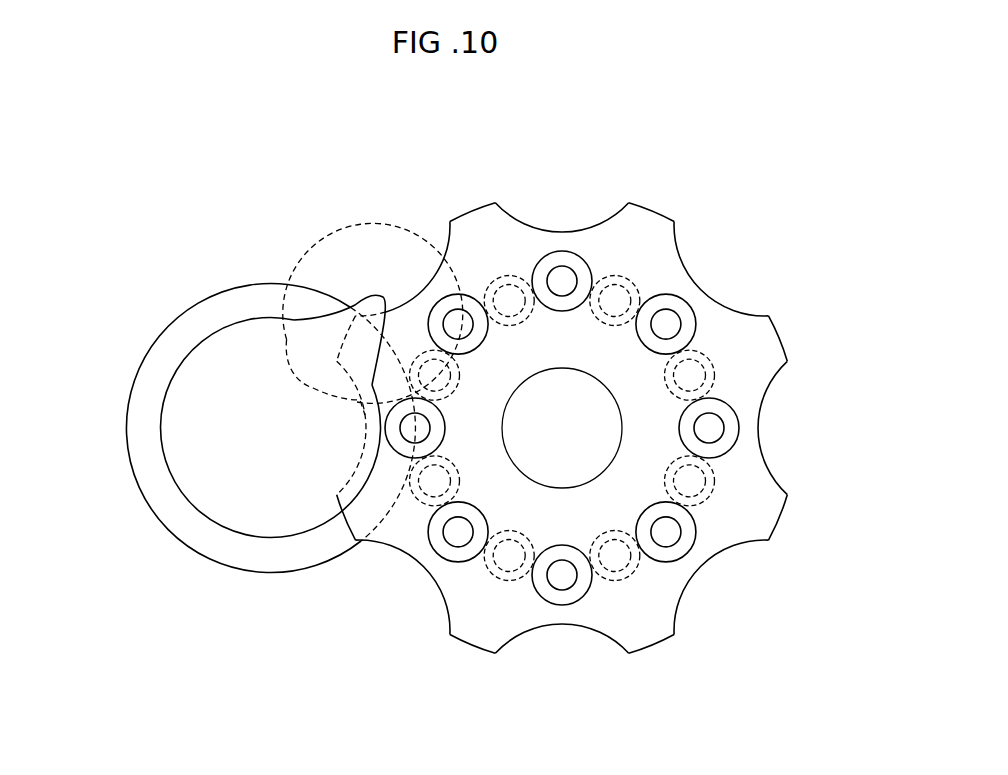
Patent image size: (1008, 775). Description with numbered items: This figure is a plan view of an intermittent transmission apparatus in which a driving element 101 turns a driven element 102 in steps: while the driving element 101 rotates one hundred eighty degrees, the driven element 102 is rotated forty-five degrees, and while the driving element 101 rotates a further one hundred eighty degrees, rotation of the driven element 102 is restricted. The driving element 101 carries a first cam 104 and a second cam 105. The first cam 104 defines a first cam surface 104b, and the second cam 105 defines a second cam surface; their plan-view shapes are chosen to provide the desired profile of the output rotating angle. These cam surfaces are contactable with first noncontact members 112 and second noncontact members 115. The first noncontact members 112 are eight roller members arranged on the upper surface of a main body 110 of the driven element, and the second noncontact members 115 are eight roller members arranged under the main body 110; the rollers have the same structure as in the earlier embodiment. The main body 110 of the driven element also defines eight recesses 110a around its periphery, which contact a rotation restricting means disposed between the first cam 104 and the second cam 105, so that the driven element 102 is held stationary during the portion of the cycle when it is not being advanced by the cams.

The driving element 101 is at (272, 238).
The driven element 102 is at (670, 185).
The first cam 104 is at (249, 527).
The first cam surface 104b is at (390, 322).
The second cam 105 is at (257, 297).
The main body of the driven element 110 is at (748, 520).
The recesses 110a is at (688, 262).
The first noncontact members 112 is at (565, 600).
The second noncontact members 115 is at (632, 578).